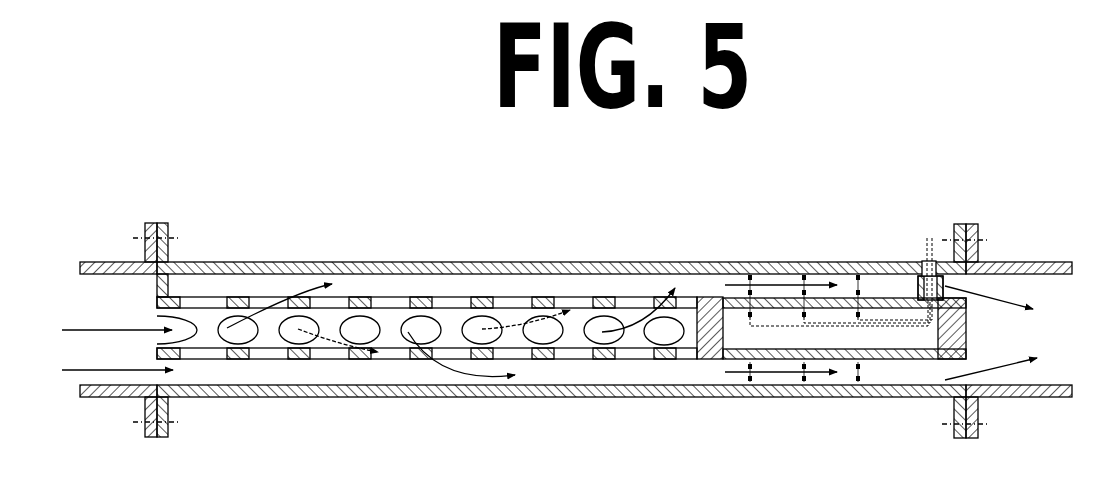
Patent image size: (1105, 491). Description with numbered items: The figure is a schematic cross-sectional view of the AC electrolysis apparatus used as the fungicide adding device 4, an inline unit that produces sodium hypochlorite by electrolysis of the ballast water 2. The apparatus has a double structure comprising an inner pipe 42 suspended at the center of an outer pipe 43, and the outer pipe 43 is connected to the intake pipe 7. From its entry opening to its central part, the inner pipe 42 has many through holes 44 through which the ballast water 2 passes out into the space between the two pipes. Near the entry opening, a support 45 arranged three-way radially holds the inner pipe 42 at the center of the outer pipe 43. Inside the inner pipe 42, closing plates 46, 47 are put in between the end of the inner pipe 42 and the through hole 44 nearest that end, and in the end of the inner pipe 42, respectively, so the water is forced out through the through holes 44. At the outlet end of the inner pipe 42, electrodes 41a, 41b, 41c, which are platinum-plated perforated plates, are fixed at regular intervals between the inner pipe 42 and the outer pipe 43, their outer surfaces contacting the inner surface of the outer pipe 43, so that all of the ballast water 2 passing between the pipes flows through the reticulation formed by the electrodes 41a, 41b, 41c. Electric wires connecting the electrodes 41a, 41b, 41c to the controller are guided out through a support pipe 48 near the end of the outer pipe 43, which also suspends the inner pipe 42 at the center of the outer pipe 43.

The ballast water 2 is at (227, 328).
The fungicide adding device 4 is at (584, 191).
The intake pipe 7 is at (97, 262).
The electrode 41a is at (754, 277).
The electrode 41b is at (807, 277).
The electrode 41c is at (861, 277).
The inner pipe 42 is at (603, 299).
The outer pipe 43 is at (512, 262).
The through holes 44 is at (478, 327).
The support 45 is at (170, 288).
The closing plate 46 is at (709, 297).
The closing plate 47 is at (968, 338).
The support pipe 48 is at (914, 290).